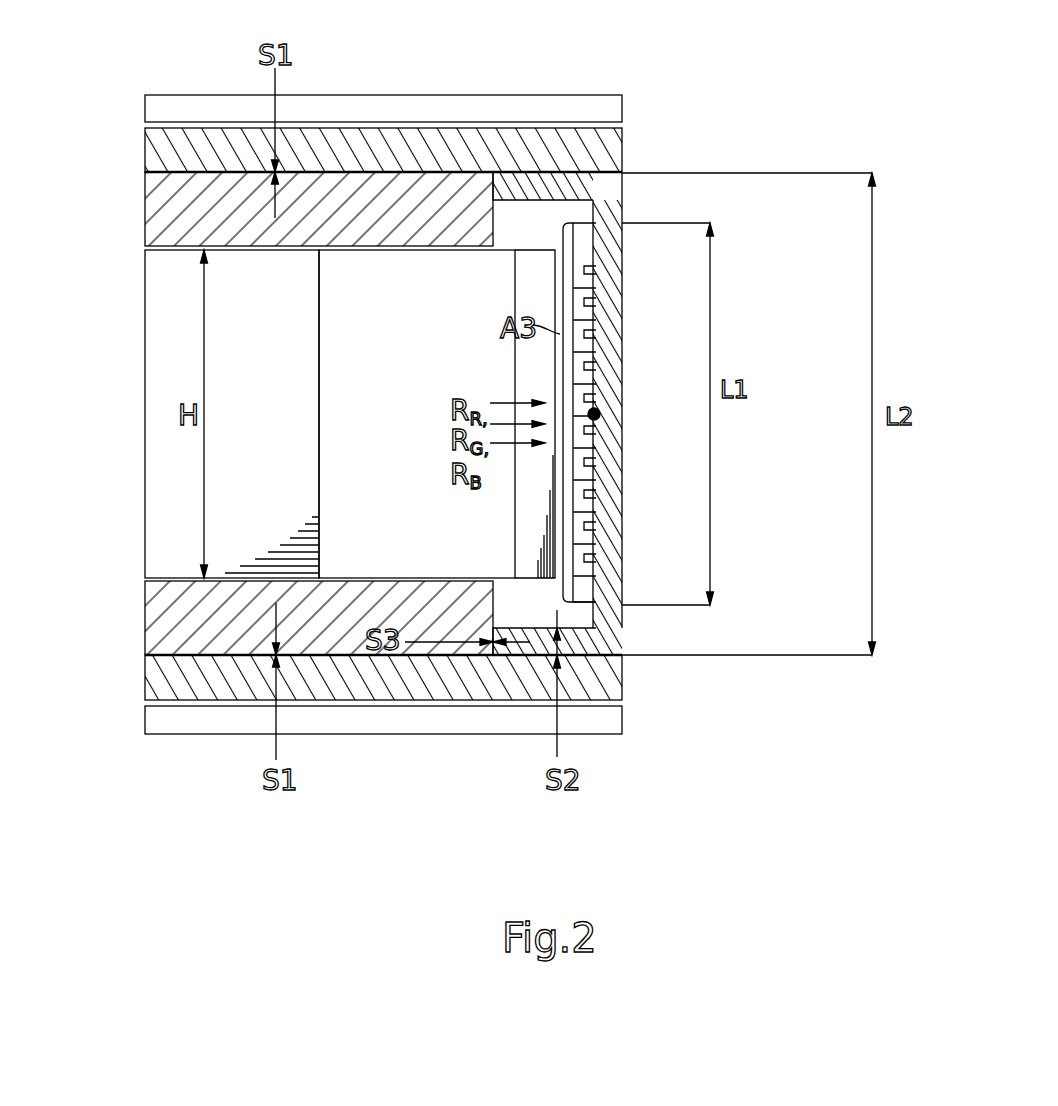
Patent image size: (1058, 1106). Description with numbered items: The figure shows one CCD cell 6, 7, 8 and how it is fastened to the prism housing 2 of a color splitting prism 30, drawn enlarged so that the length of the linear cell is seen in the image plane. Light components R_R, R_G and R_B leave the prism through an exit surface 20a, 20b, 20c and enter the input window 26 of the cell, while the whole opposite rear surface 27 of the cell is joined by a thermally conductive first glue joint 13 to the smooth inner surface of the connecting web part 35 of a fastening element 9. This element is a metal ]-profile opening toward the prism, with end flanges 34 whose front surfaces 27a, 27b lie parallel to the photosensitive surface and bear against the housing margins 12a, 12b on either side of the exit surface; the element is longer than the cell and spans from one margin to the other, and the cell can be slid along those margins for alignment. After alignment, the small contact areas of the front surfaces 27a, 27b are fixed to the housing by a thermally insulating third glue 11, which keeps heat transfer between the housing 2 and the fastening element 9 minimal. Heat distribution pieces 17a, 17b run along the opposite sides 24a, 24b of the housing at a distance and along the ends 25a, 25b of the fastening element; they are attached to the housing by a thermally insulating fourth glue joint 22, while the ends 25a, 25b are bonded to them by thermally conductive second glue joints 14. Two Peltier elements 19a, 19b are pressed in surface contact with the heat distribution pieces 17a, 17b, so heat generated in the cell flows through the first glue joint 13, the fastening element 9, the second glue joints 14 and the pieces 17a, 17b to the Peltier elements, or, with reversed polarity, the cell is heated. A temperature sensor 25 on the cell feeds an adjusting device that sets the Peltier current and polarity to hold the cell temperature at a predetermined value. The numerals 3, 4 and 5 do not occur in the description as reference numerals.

The prism housing 2 is at (212, 224).
The light emitting element 3 is at (653, 373).
The light emitting element 4 is at (653, 373).
The light emitting element 5 is at (540, 265).
The CCD cell 6 is at (689, 415).
The CCD cell 7 is at (689, 415).
The CCD cell 8 is at (583, 327).
The fastening element 9 is at (621, 563).
The third glue 11 is at (493, 187).
The margin of the housing 12a is at (500, 223).
The margin of the housing 12b is at (700, 525).
The first glue joint 13 is at (598, 592).
The second glue joint 14 is at (557, 170).
The heat distribution piece 17a is at (400, 164).
The heat distribution piece 17b is at (448, 696).
The Peltier element 19a is at (378, 105).
The Peltier element 19b is at (338, 718).
The prism exit surface 20a is at (724, 493).
The prism exit surface 20b is at (724, 493).
The prism exit surface 20c is at (700, 525).
The fourth glue joint 22 is at (200, 160).
The side of the housing 24a is at (170, 186).
The side of the housing 24b is at (178, 640).
The temperature sensor 25 is at (600, 414).
The end of the fastening element 25a is at (523, 160).
The end of the fastening element 25b is at (586, 668).
The input window 26 is at (563, 348).
The rear surface 27 is at (620, 362).
The front surface 27a is at (480, 199).
The front surface 27b is at (493, 625).
The color splitting prism 30 is at (390, 429).
The end flanges 34 is at (555, 174).
The connecting web part 35 is at (608, 484).